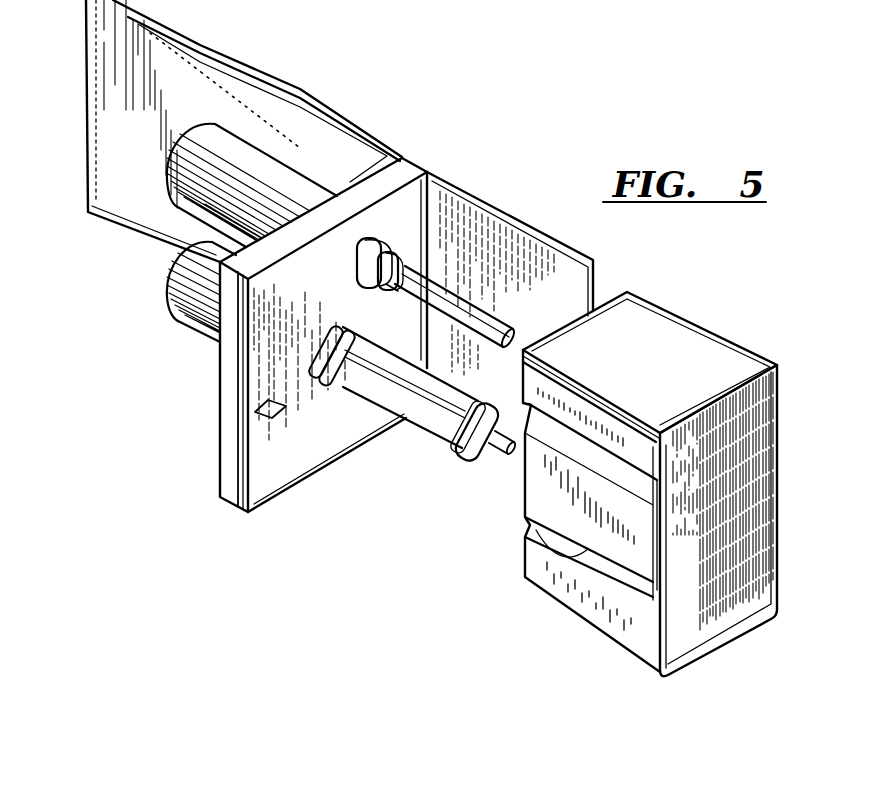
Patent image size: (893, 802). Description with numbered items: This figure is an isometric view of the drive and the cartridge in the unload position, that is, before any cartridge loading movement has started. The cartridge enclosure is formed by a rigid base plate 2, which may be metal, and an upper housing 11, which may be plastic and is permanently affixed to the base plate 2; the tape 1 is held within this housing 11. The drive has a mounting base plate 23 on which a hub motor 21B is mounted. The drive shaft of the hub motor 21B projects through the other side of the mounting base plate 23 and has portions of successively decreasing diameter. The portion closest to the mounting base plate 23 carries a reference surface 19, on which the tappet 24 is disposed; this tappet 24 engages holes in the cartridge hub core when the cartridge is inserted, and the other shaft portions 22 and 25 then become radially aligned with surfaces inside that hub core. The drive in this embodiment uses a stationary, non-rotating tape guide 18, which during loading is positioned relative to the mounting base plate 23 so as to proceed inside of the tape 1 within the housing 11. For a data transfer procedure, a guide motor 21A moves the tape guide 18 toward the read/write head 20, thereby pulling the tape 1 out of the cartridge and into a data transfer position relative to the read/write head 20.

The tape 1 is at (545, 492).
The base plate 2 is at (722, 484).
The upper housing 11 is at (633, 355).
The tape guide 18 is at (428, 424).
The reference surface 19 is at (378, 288).
The read/write head 20 is at (264, 416).
The guide motor 21A is at (200, 310).
The hub motor 21B is at (227, 196).
The drive shaft portion 22 is at (468, 308).
The mounting base plate 23 is at (233, 402).
The tappet 24 is at (390, 248).
The drive shaft portion 25 is at (383, 247).